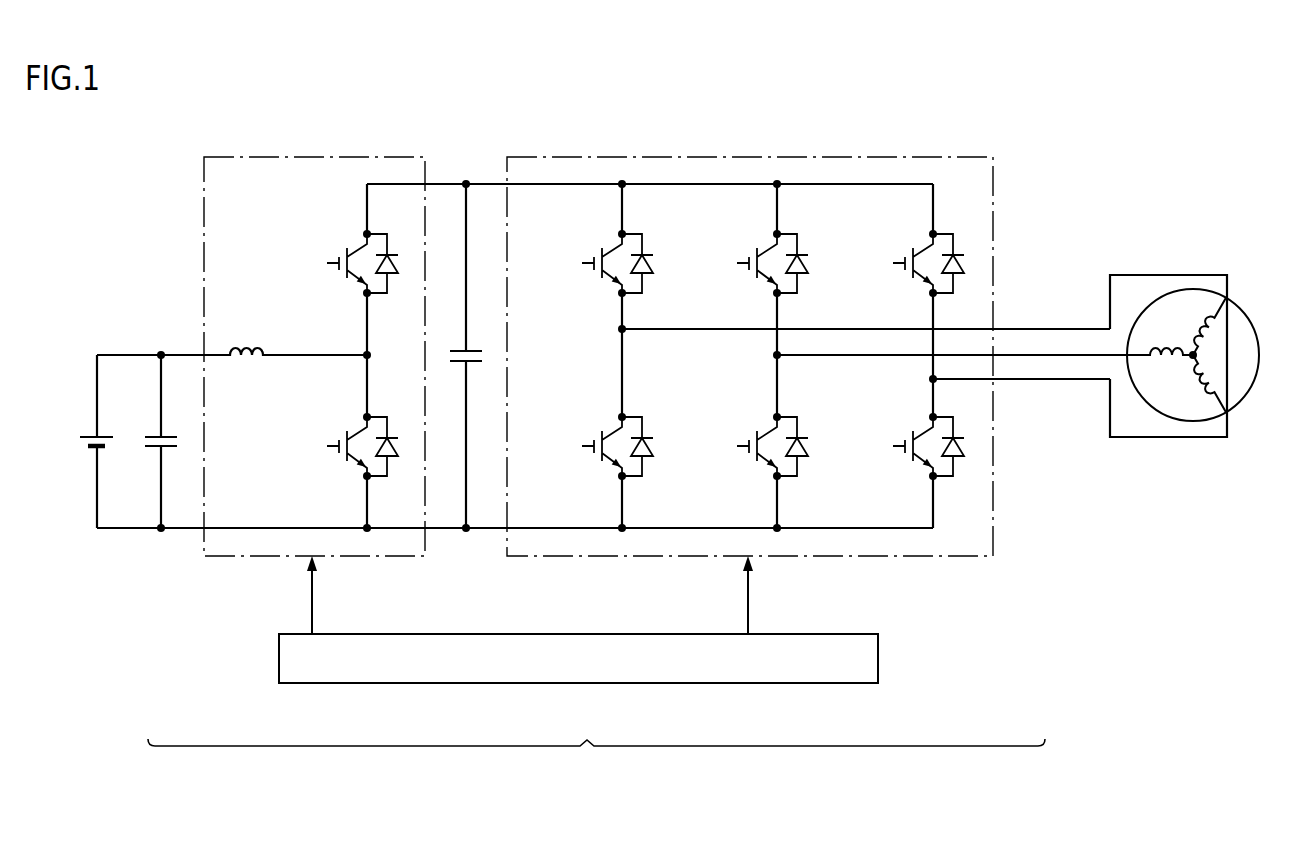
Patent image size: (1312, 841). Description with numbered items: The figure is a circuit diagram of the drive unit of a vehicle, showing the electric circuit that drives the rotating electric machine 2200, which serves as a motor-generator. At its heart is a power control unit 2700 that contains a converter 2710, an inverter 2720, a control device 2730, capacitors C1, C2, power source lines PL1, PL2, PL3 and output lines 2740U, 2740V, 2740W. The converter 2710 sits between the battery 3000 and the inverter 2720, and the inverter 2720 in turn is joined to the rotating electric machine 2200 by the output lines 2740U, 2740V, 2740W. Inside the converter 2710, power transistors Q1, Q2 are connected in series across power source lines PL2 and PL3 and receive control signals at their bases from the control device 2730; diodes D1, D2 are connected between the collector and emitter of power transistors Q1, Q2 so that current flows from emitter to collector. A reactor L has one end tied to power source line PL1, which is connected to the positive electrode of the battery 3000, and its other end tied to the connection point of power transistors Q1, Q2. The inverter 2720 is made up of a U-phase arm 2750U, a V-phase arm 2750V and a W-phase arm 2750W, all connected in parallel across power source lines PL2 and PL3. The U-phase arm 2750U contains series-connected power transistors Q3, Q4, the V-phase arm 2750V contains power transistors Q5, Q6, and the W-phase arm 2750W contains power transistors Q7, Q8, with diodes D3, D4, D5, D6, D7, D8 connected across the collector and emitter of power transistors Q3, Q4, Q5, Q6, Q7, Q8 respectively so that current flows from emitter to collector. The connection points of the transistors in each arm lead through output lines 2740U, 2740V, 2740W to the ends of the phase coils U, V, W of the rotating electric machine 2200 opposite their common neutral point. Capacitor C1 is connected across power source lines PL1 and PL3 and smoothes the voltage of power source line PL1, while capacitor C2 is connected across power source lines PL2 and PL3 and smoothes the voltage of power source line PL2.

The PCU (Power Control Unit) 2700 is at (596, 757).
The converter 2710 is at (316, 156).
The inverter 2720 is at (943, 156).
The control device 2730 is at (843, 684).
The rotating electric machine 2200 is at (1205, 356).
The battery 3000 is at (84, 436).
The power source line PL1 is at (147, 353).
The power source line PL2 is at (446, 182).
The power source line PL3 is at (440, 531).
The reactor L is at (244, 352).
The capacitor C1 is at (172, 435).
The capacitor C2 is at (478, 350).
The power transistor Q1 is at (341, 249).
The power transistor Q2 is at (341, 432).
The power transistor Q3 is at (602, 254).
The power transistor Q4 is at (602, 437).
The power transistor Q5 is at (757, 254).
The power transistor Q6 is at (757, 437).
The power transistor Q7 is at (913, 254).
The power transistor Q8 is at (913, 437).
The diode D1 is at (399, 258).
The diode D2 is at (399, 441).
The diode D3 is at (647, 252).
The diode D4 is at (647, 435).
The diode D5 is at (802, 252).
The diode D6 is at (802, 435).
The diode D7 is at (958, 252).
The diode D8 is at (957, 457).
The output line 2740U is at (658, 332).
The output line 2740V is at (812, 358).
The output line 2740W is at (960, 382).
The U-phase arm 2750U is at (550, 336).
The V-phase arm 2750V is at (770, 362).
The W-phase arm 2750W is at (858, 385).
The U-phase coil U is at (1213, 324).
The V-phase coil V is at (1166, 339).
The W-phase coil W is at (1203, 385).